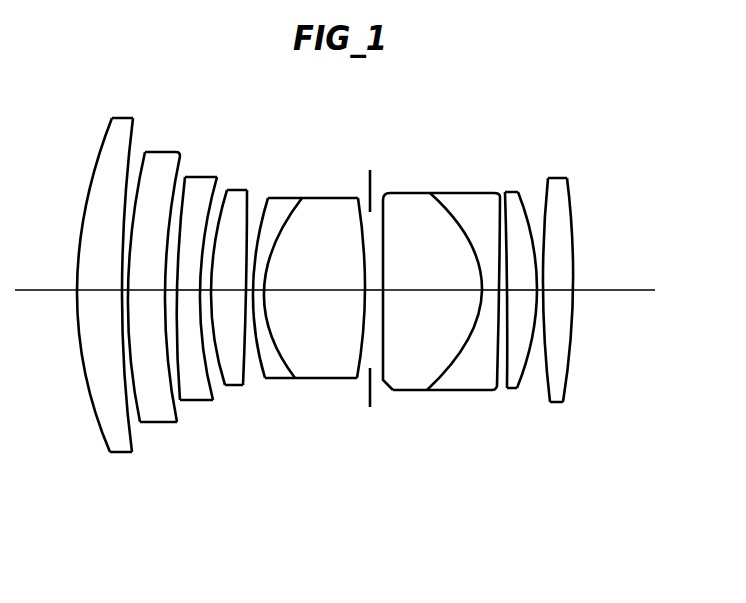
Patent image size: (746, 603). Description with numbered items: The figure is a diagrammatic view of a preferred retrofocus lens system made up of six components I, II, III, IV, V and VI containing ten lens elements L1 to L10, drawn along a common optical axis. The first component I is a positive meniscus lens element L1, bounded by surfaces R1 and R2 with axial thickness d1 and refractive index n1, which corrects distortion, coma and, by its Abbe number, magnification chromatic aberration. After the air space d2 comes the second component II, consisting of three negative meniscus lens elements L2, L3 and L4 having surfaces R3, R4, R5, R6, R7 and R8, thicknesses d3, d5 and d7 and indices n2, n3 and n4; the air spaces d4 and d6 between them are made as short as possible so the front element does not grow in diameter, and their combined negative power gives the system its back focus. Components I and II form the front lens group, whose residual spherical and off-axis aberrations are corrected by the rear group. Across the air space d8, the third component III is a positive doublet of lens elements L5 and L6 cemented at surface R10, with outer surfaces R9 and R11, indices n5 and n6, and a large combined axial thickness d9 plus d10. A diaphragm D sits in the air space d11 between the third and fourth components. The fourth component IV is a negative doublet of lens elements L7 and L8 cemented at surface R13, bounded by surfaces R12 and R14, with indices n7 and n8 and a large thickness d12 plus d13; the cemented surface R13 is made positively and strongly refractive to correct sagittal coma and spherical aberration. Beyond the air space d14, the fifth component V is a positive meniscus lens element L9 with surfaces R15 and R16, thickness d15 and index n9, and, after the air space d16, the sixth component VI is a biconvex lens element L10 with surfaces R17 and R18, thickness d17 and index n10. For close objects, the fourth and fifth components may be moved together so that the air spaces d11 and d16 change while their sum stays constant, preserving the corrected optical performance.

The first component I is at (113, 327).
The second component II is at (167, 327).
The third component III is at (339, 327).
The fourth component IV is at (527, 327).
The fifth component V is at (590, 327).
The sixth component VI is at (594, 327).
The diaphragm D is at (371, 170).
The positive meniscus lens element L1 is at (113, 301).
The negative meniscus lens element L2 is at (120, 301).
The negative meniscus lens element L3 is at (240, 301).
The negative meniscus lens element L4 is at (167, 301).
The fifth lens element L5 is at (339, 301).
The sixth lens element L6 is at (360, 301).
The seventh lens element L7 is at (464, 301).
The eighth lens element L8 is at (550, 301).
The positive meniscus lens element L9 is at (597, 301).
The biconvex lens element L10 is at (600, 301).
The refractive index of first lens element n1 is at (113, 285).
The refractive index of second lens element n2 is at (120, 269).
The refractive index of third lens element n3 is at (240, 264).
The refractive index of fourth lens element n4 is at (167, 235).
The refractive index of fifth lens element n5 is at (339, 251).
The refractive index of sixth lens element n6 is at (360, 256).
The refractive index of seventh lens element n7 is at (464, 258).
The refractive index of eighth lens element n8 is at (550, 233).
The refractive index of ninth lens element n9 is at (603, 250).
The refractive index of tenth lens element n10 is at (600, 271).
The front surface of first lens element R1 is at (98, 418).
The rear surface of first lens element R2 is at (132, 442).
The front surface of second lens element R3 is at (148, 424).
The rear surface of second lens element R4 is at (160, 366).
The front surface of third lens element R5 is at (205, 397).
The rear surface of third lens element R6 is at (245, 380).
The front surface of fourth lens element R7 is at (218, 338).
The rear surface of fourth lens element R8 is at (255, 355).
The front surface of fifth lens element R9 is at (262, 345).
The cemented surface of third component R10 is at (300, 380).
The rear surface of sixth lens element R11 is at (362, 385).
The front surface of seventh lens element R12 is at (398, 391).
The cemented surface of fourth component R13 is at (480, 391).
The rear surface of eighth lens element R14 is at (500, 352).
The front surface of ninth lens element R15 is at (508, 356).
The rear surface of ninth lens element R16 is at (532, 367).
The front surface of tenth lens element R17 is at (549, 383).
The rear surface of tenth lens element R18 is at (566, 397).
The axial thickness of first lens element d1 is at (105, 288).
The air space between first and second lens elements d2 is at (128, 290).
The axial thickness of second lens element d3 is at (142, 250).
The air space between second and third lens elements d4 is at (170, 283).
The axial thickness of third lens element d5 is at (205, 215).
The air space between third and fourth lens elements d6 is at (205, 290).
The axial thickness of fourth lens element d7 is at (238, 289).
The air space between fourth and fifth lens elements d8 is at (246, 291).
The axial thickness of fifth lens element d9 is at (262, 286).
The axial thickness of sixth lens element d10 is at (312, 291).
The air space between third and fourth components d11 is at (368, 288).
The axial thickness of seventh lens element d12 is at (427, 288).
The axial thickness of eighth lens element d13 is at (490, 290).
The air space between fourth and fifth components d14 is at (503, 288).
The axial thickness of ninth lens element d15 is at (522, 292).
The air space between fifth and sixth components d16 is at (541, 291).
The axial thickness of tenth lens element d17 is at (560, 291).